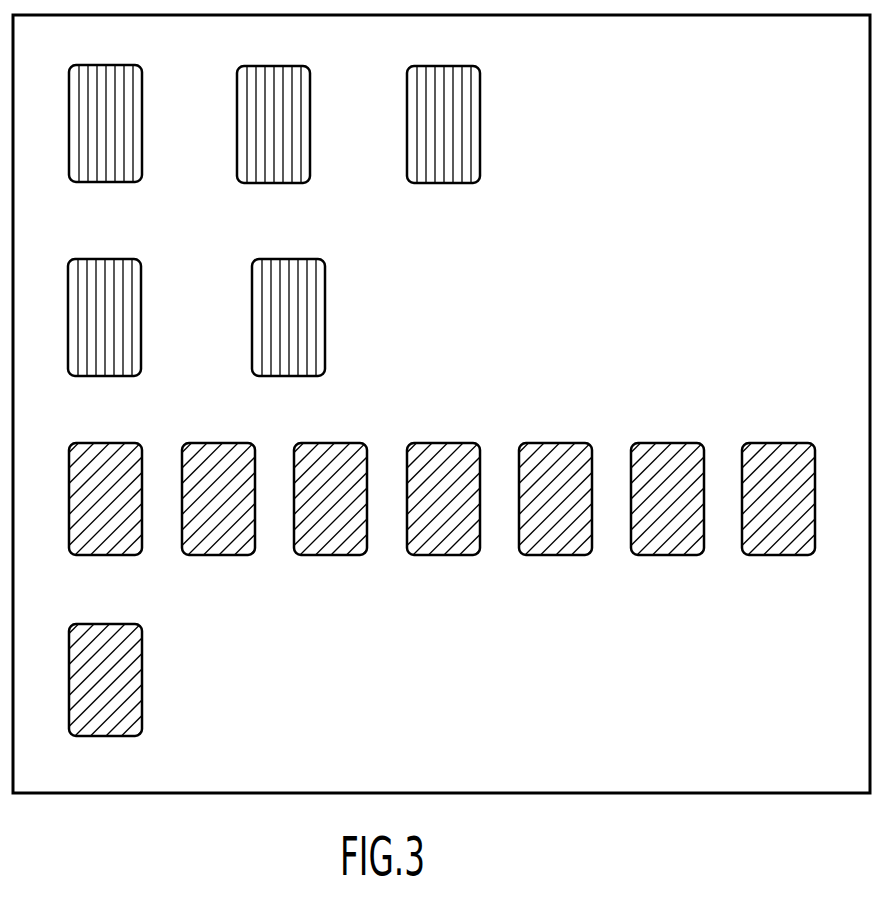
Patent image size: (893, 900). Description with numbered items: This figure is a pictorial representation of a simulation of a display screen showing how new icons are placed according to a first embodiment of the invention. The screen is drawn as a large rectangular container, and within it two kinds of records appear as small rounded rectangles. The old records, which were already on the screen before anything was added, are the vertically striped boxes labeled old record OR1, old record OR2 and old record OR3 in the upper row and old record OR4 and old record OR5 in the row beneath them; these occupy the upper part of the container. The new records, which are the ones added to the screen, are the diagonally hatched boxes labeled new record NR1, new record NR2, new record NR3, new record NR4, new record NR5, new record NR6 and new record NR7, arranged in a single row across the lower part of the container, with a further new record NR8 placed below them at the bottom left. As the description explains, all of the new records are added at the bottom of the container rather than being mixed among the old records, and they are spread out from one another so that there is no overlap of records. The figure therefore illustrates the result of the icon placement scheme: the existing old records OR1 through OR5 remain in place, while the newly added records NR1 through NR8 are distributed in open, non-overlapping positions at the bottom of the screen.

The old record OR1 is at (105, 141).
The old record OR2 is at (273, 142).
The old record OR3 is at (443, 142).
The old record OR4 is at (104, 335).
The old record OR5 is at (288, 335).
The new record NR1 is at (132, 517).
The new record NR2 is at (221, 517).
The new record NR3 is at (333, 517).
The new record NR4 is at (446, 517).
The new record NR5 is at (558, 517).
The new record NR6 is at (670, 517).
The new record NR7 is at (758, 517).
The new record NR8 is at (132, 698).